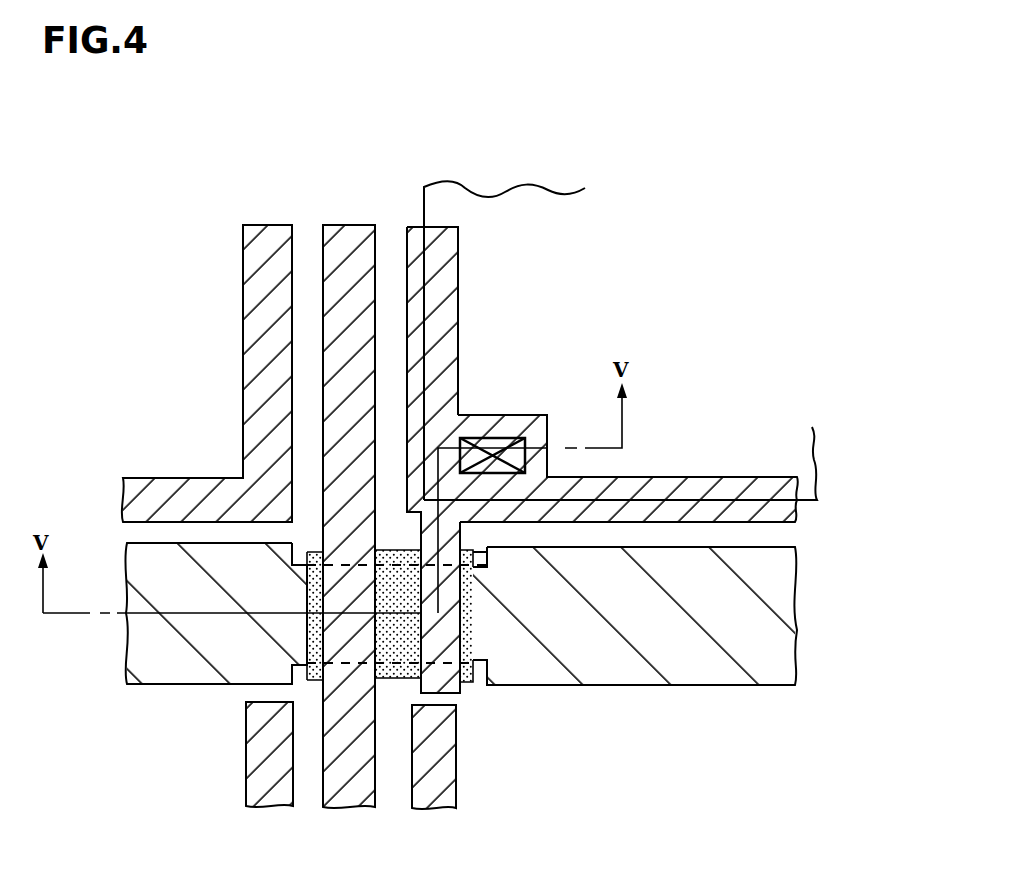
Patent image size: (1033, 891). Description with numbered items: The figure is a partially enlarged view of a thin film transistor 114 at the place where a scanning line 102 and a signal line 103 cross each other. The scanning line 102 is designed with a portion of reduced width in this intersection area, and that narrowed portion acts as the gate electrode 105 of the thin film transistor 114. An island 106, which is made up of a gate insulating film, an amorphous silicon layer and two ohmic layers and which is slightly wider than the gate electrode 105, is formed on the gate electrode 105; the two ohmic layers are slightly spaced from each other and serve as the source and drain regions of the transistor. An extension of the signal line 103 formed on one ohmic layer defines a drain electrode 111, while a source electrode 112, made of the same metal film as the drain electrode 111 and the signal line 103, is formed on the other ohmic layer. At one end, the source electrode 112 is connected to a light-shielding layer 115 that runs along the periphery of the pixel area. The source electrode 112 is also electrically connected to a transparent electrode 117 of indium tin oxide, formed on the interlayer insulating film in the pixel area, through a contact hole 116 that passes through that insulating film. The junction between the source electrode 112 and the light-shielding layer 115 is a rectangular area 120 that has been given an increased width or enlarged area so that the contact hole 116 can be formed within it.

The scanning line 102 is at (232, 660).
The signal line 103 is at (350, 236).
The gate electrode 105 is at (462, 680).
The island 106 is at (315, 683).
The drain electrode 111 is at (305, 580).
The source electrode 112 is at (452, 636).
The thin film transistor 114 is at (461, 710).
The light-shielding layer 115 is at (698, 477).
The contact hole 116 is at (503, 425).
The transparent electrode 117 is at (505, 203).
The rectangular area 120 is at (488, 415).